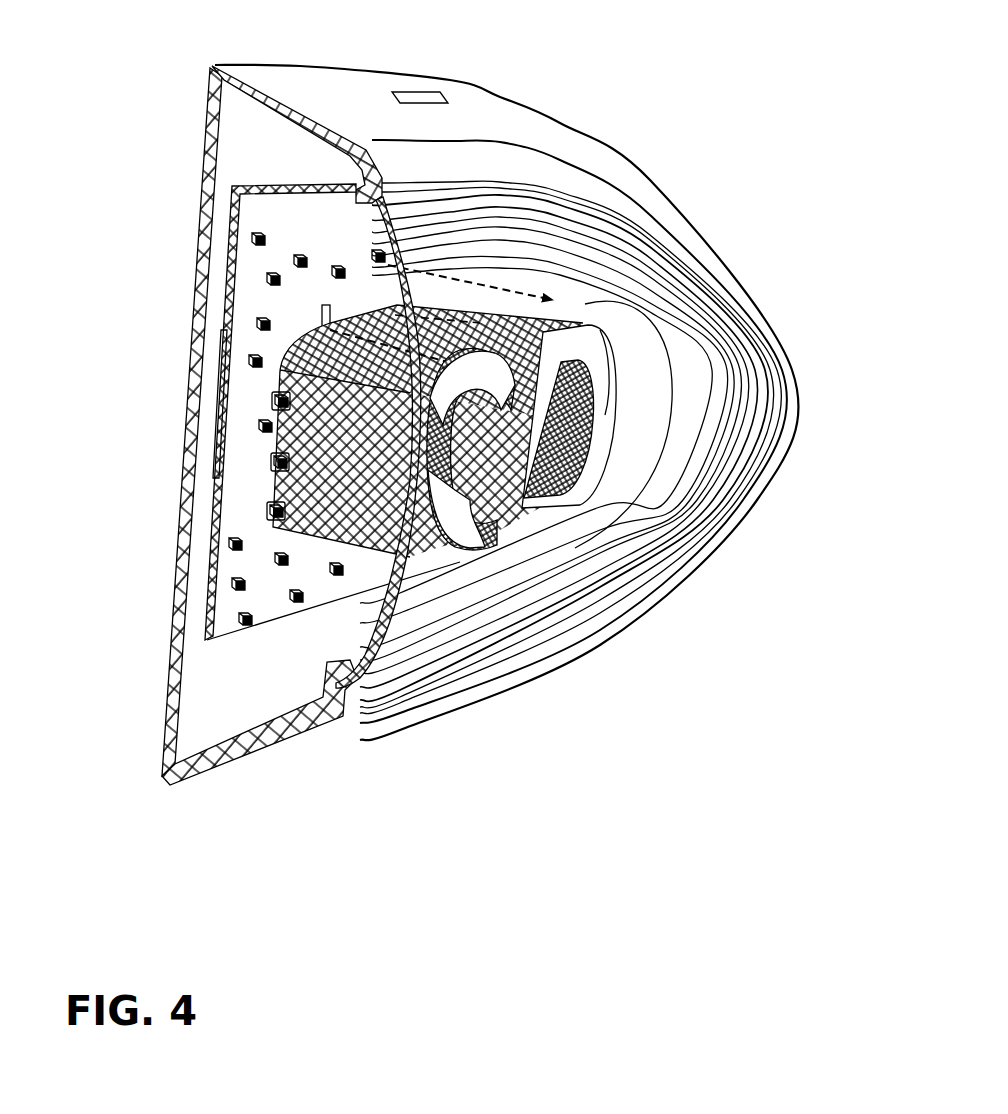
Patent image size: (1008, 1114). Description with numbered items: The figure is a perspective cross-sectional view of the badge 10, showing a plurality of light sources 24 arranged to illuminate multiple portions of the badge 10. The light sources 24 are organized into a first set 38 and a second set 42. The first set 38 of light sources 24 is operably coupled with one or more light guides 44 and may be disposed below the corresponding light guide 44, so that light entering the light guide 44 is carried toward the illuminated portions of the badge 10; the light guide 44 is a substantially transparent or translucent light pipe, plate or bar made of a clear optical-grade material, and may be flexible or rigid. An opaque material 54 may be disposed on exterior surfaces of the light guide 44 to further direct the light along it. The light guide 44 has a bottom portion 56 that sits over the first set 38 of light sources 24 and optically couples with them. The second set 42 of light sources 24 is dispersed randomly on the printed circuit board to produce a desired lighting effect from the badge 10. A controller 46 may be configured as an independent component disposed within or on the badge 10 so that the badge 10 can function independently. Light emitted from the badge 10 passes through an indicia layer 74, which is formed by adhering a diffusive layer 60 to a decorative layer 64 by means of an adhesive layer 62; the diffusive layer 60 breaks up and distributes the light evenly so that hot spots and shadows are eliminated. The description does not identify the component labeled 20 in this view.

The badge 10 is at (282, 52).
The housing 20 is at (602, 306).
The light sources 24 is at (266, 279).
The first set of light sources 38 is at (240, 393).
The second set of light sources 42 is at (238, 620).
The light guide 44 is at (290, 270).
The controller 46 is at (226, 464).
The opaque material 54 is at (585, 300).
The bottom portion 56 is at (417, 577).
The diffusive layer 60 is at (483, 590).
The adhesive layer 62 is at (322, 595).
The decorative layer 64 is at (527, 520).
The indicia layer 74 is at (425, 100).